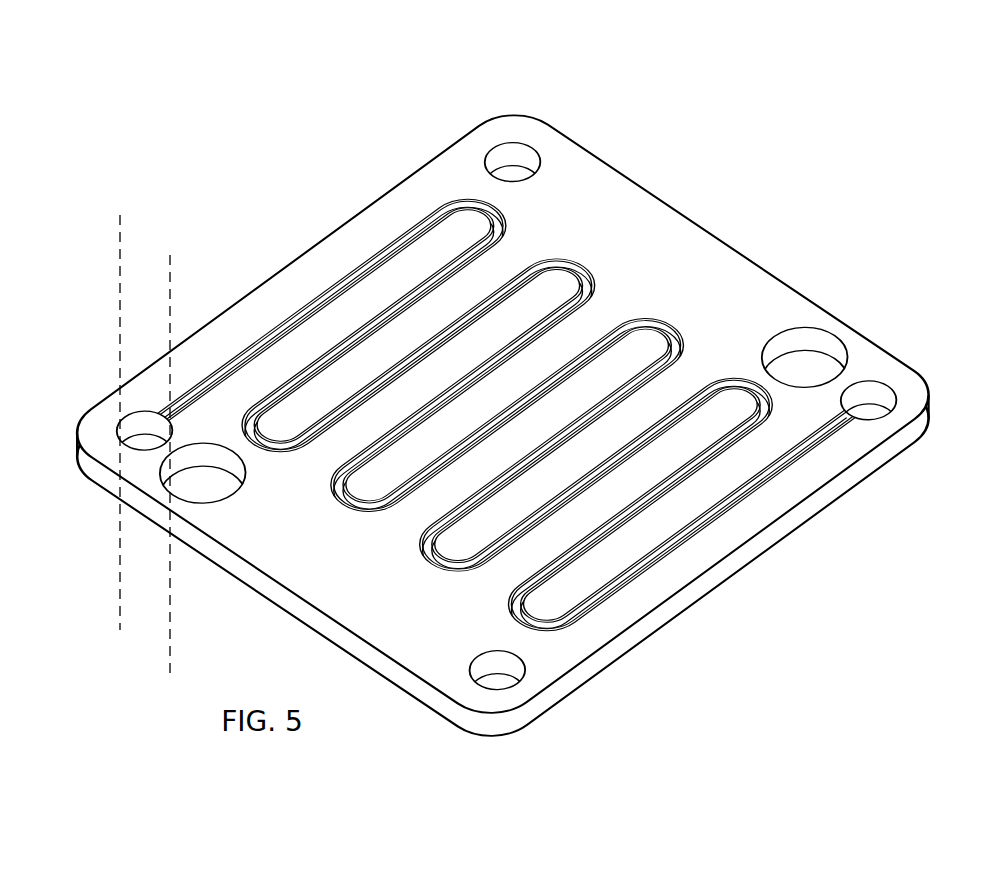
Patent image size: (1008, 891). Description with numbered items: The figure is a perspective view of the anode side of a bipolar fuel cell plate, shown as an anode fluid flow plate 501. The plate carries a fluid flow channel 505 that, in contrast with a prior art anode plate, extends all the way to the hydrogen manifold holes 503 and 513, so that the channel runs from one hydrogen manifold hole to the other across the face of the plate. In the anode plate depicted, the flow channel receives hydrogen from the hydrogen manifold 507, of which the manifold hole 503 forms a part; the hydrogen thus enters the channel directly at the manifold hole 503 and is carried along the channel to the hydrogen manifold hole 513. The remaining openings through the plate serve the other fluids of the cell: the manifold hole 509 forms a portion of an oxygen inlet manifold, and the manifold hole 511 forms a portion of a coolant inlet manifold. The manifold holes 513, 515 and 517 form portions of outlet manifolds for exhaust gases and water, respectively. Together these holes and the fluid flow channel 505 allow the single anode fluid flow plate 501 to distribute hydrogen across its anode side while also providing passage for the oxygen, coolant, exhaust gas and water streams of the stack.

The anode fluid flow plate 501 is at (290, 174).
The hydrogen manifold hole 503 is at (133, 428).
The fluid flow channel 505 is at (300, 315).
The hydrogen manifold 507 is at (132, 535).
The manifold hole 509 is at (227, 463).
The manifold hole 511 is at (503, 688).
The hydrogen manifold hole 513 is at (877, 400).
The manifold hole 515 is at (820, 342).
The manifold hole 517 is at (513, 155).